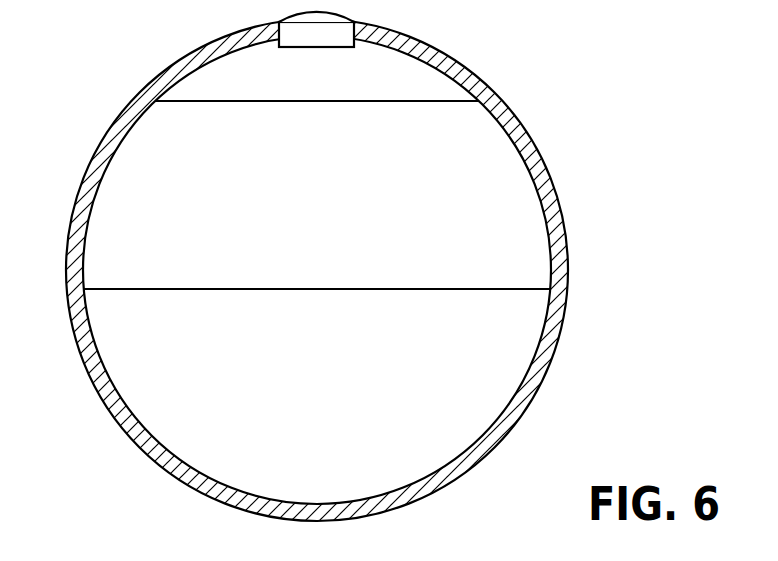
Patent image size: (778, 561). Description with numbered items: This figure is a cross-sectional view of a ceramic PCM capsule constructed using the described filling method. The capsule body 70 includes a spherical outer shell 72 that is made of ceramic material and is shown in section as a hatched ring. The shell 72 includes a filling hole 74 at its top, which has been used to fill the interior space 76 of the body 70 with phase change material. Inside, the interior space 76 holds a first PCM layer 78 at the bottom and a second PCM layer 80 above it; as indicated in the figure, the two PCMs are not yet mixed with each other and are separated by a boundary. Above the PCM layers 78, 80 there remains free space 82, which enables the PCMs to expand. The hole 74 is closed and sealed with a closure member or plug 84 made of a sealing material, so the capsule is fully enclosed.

The capsule body 70 is at (324, 266).
The spherical outer shell 72 is at (553, 345).
The filling hole 74 is at (370, 54).
The interior space 76 is at (112, 386).
The first PCM layer 78 is at (330, 400).
The second PCM layer 80 is at (330, 212).
The free space 82 is at (205, 83).
The plug 84 is at (303, 41).